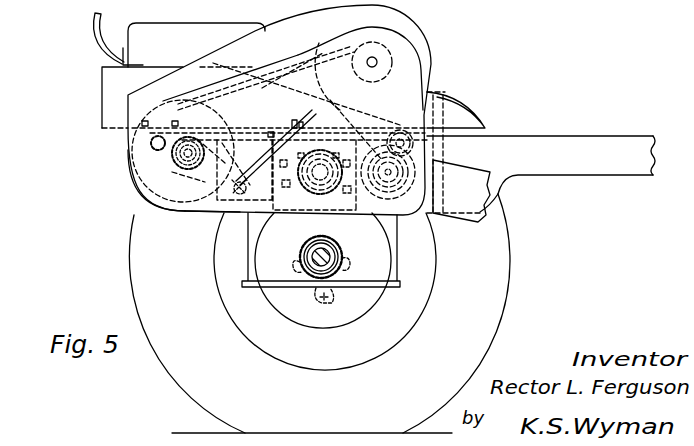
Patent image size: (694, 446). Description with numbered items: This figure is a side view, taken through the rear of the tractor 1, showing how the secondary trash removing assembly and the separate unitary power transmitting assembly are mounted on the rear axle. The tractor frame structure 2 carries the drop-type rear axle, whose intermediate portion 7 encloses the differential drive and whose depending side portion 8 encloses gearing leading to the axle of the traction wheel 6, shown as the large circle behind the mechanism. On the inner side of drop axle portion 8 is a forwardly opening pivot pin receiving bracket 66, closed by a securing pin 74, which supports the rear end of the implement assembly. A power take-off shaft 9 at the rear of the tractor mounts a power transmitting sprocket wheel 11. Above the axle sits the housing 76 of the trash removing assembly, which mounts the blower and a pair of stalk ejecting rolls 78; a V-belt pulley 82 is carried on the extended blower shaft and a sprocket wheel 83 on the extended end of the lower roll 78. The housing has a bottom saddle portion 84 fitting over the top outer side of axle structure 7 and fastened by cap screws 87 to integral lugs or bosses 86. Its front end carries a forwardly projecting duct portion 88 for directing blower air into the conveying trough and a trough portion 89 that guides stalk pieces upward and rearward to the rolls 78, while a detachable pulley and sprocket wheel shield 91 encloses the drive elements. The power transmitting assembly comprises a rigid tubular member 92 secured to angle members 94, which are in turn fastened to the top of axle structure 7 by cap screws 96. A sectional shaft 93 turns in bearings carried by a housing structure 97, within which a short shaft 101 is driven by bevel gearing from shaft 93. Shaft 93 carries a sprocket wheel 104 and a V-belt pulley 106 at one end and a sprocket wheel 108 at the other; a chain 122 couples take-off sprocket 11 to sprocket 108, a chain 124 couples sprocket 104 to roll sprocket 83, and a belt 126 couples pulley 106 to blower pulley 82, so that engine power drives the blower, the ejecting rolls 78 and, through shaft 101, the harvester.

The tractor 1 is at (633, 163).
The frame structure 2 is at (524, 136).
The traction wheel 6 is at (511, 267).
The intermediate portion of rear axle structure 7 is at (305, 214).
The depending side portion of rear axle 8 is at (253, 238).
The power take-off shaft 9 is at (276, 147).
The power transmitting sprocket wheel 11 is at (239, 164).
The pivot pin receiving bracket 66 is at (352, 267).
The securing pin 74 is at (335, 295).
The housing 76 is at (416, 27).
The stalk ejecting roll 78 is at (391, 164).
The V-belt pulley 82 is at (388, 70).
The sprocket wheel 83 is at (403, 215).
The bottom saddle portion 84 is at (286, 171).
The lug or boss 86 is at (350, 194).
The cap screw 87 is at (315, 153).
The duct portion 88 is at (470, 106).
The trough portion 89 is at (436, 182).
The pulley and sprocket wheel shield 91 is at (272, 63).
The tubular member 92 is at (133, 160).
The sectional shaft 93 is at (176, 154).
The angle member 94 is at (104, 100).
The cap screw 96 is at (302, 116).
The housing structure 97 is at (168, 212).
The short shaft 101 is at (246, 193).
The sprocket wheel 104 is at (191, 129).
The V-belt pulley 106 is at (173, 105).
The sprocket wheel 108 is at (188, 160).
The chain 122 is at (210, 222).
The chain 124 is at (364, 212).
The belt 126 is at (302, 57).